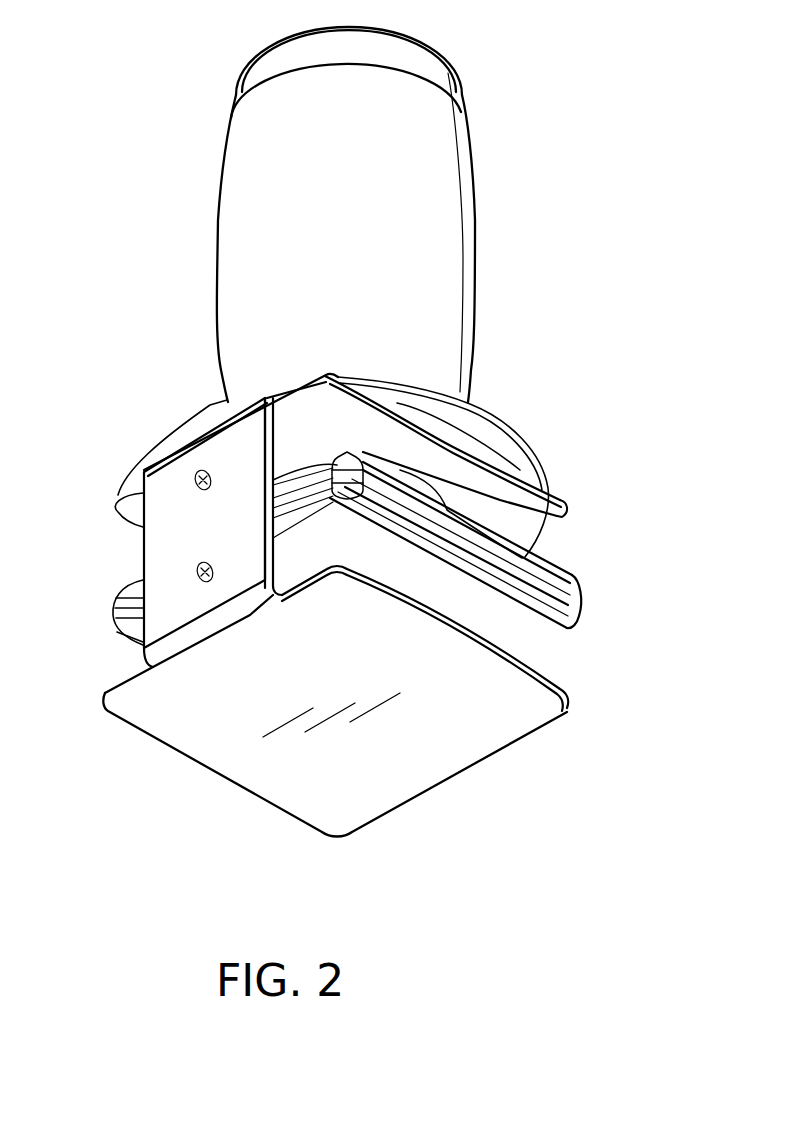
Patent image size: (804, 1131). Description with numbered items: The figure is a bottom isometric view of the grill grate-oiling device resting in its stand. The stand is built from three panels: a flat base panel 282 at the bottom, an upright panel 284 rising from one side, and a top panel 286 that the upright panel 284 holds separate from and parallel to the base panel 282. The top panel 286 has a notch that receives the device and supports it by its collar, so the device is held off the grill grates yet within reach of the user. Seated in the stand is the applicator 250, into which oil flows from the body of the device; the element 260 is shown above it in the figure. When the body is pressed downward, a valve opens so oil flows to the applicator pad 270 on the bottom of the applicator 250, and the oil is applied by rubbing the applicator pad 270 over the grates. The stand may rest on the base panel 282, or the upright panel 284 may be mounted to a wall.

The container 260 is at (437, 200).
The top panel 286 is at (450, 470).
The upright panel 284 is at (160, 543).
The applicator 250 is at (583, 583).
The applicator pad 270 is at (530, 637).
The base panel 282 is at (196, 741).